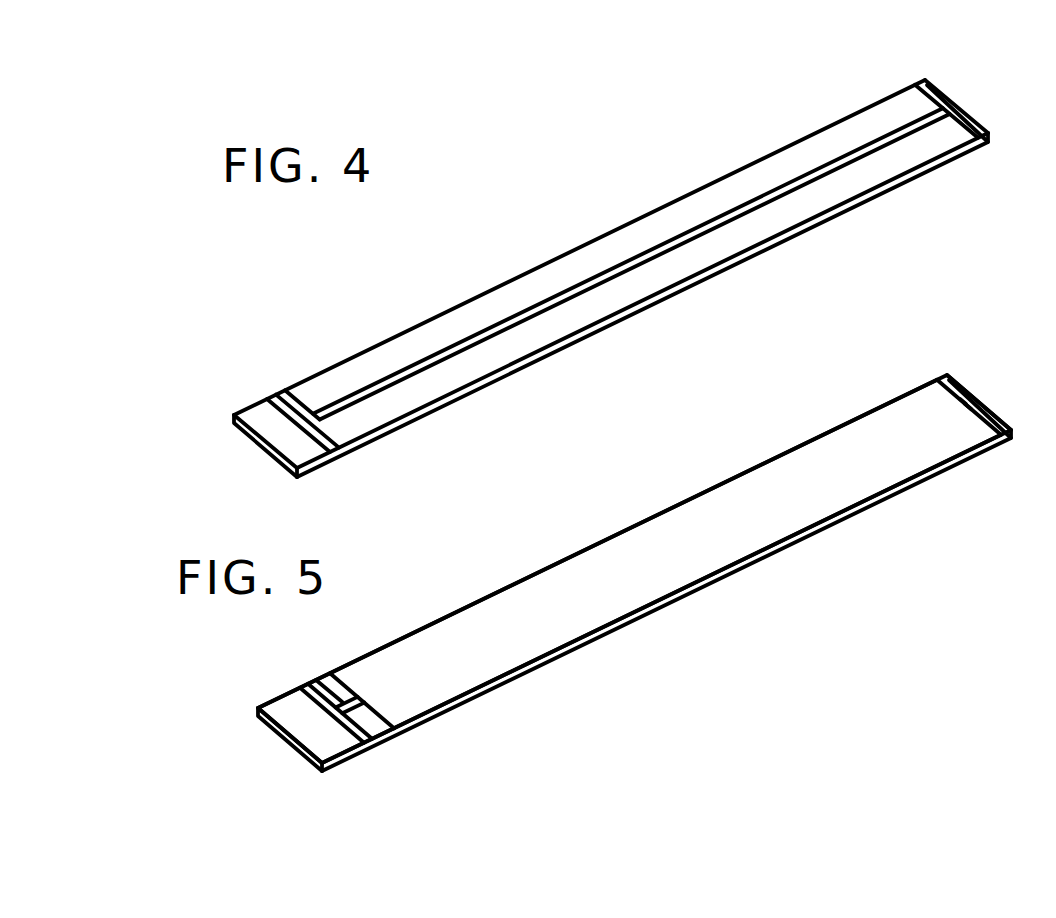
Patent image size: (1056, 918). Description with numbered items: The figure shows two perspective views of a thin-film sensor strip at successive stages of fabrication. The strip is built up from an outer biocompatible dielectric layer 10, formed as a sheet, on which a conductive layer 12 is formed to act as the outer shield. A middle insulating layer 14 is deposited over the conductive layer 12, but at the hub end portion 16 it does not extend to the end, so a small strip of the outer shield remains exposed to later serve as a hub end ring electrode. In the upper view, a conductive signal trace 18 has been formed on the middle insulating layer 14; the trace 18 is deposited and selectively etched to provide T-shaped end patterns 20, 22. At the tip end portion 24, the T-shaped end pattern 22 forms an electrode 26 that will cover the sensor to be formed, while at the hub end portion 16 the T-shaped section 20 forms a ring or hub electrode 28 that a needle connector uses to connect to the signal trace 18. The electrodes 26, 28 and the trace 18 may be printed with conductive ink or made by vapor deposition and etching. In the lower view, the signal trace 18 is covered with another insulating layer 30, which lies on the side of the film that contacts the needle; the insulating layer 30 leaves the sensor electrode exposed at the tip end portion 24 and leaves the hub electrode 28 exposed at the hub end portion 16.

In FIG. 5, the dielectric layer 10 is at (672, 598).
In FIG. 4, the conductive layer 12 is at (285, 443).
In FIG. 5, the conductive layer 12 is at (305, 730).
In FIG. 4, the middle insulating layer 14 is at (505, 293).
In FIG. 5, the middle insulating layer 14 is at (385, 730).
In FIG. 4, the hub end portion 16 is at (247, 377).
In FIG. 5, the hub end portion 16 is at (240, 688).
In FIG. 4, the conductive signal trace 18 is at (708, 228).
In FIG. 5, the conductive signal trace 18 is at (342, 700).
In FIG. 4, the T-shaped end pattern 20 is at (307, 408).
In FIG. 4, the T-shaped end pattern 22 is at (928, 104).
In FIG. 4, the tip end portion 24 is at (958, 163).
In FIG. 5, the tip end portion 24 is at (915, 375).
In FIG. 4, the electrode 26 is at (965, 117).
In FIG. 5, the electrode 26 is at (963, 392).
In FIG. 4, the hub electrode 28 is at (278, 398).
In FIG. 5, the hub electrode 28 is at (307, 690).
In FIG. 5, the insulating layer 30 is at (498, 608).